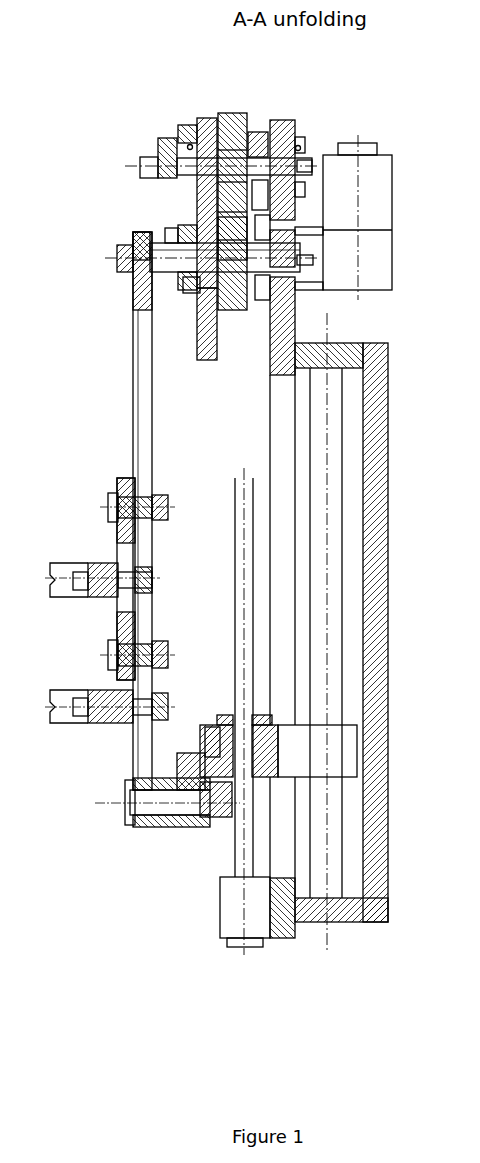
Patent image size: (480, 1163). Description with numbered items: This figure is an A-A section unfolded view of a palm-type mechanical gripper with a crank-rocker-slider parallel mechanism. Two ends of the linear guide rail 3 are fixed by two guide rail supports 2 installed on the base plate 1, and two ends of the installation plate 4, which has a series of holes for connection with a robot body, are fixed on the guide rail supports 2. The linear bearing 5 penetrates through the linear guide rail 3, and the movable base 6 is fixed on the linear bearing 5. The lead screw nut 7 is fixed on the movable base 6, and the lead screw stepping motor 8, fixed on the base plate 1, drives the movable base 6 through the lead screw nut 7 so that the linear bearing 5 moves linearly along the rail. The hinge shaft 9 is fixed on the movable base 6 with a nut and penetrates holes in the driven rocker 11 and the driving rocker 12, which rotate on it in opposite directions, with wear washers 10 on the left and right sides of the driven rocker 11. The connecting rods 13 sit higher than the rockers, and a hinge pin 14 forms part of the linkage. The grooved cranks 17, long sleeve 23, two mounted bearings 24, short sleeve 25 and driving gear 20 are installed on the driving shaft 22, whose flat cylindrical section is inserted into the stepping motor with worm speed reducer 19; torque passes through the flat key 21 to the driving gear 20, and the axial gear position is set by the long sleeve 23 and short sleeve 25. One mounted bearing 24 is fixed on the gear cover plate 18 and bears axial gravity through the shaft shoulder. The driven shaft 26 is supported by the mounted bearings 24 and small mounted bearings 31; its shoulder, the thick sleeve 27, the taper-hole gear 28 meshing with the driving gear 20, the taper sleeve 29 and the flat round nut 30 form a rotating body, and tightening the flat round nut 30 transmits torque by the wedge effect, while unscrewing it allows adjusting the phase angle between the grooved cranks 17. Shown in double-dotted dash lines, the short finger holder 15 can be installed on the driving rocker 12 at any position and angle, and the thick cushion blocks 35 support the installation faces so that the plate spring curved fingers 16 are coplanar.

The base plate 1 is at (295, 905).
The guide rail support 2 is at (330, 905).
The linear guide rail 3 is at (327, 843).
The installation plate 4 is at (388, 797).
The linear bearing 5 is at (330, 757).
The movable base 6 is at (277, 738).
The lead screw nut 7 is at (267, 713).
The lead screw stepping motor 8 is at (240, 918).
The hinge shaft 9 is at (193, 828).
The wear washer 10 is at (177, 828).
The driven rocker 11 is at (158, 827).
The driving rocker 12 is at (137, 827).
The connecting rod 13 is at (120, 633).
The hinge pin 14 is at (112, 657).
The short finger holder 15 is at (117, 577).
The plate spring curved finger 16 is at (63, 570).
The grooved crank 17 is at (147, 410).
The gear cover plate 18 is at (197, 340).
The stepping motor with worm speed reducer 19 is at (197, 300).
The driving gear 20 is at (187, 290).
The flat key 21 is at (133, 277).
The driving shaft 22 is at (120, 257).
The long sleeve 23 is at (137, 235).
The mounted bearing 24 is at (187, 243).
The short sleeve 25 is at (190, 238).
The driven shaft 26 is at (150, 152).
The thick sleeve 27 is at (187, 132).
The taper-hole gear 28 is at (217, 135).
The taper sleeve 29 is at (250, 135).
The flat round nut 30 is at (272, 140).
The small mounted bearing 31 is at (300, 138).
The thick cushion block 35 is at (100, 727).